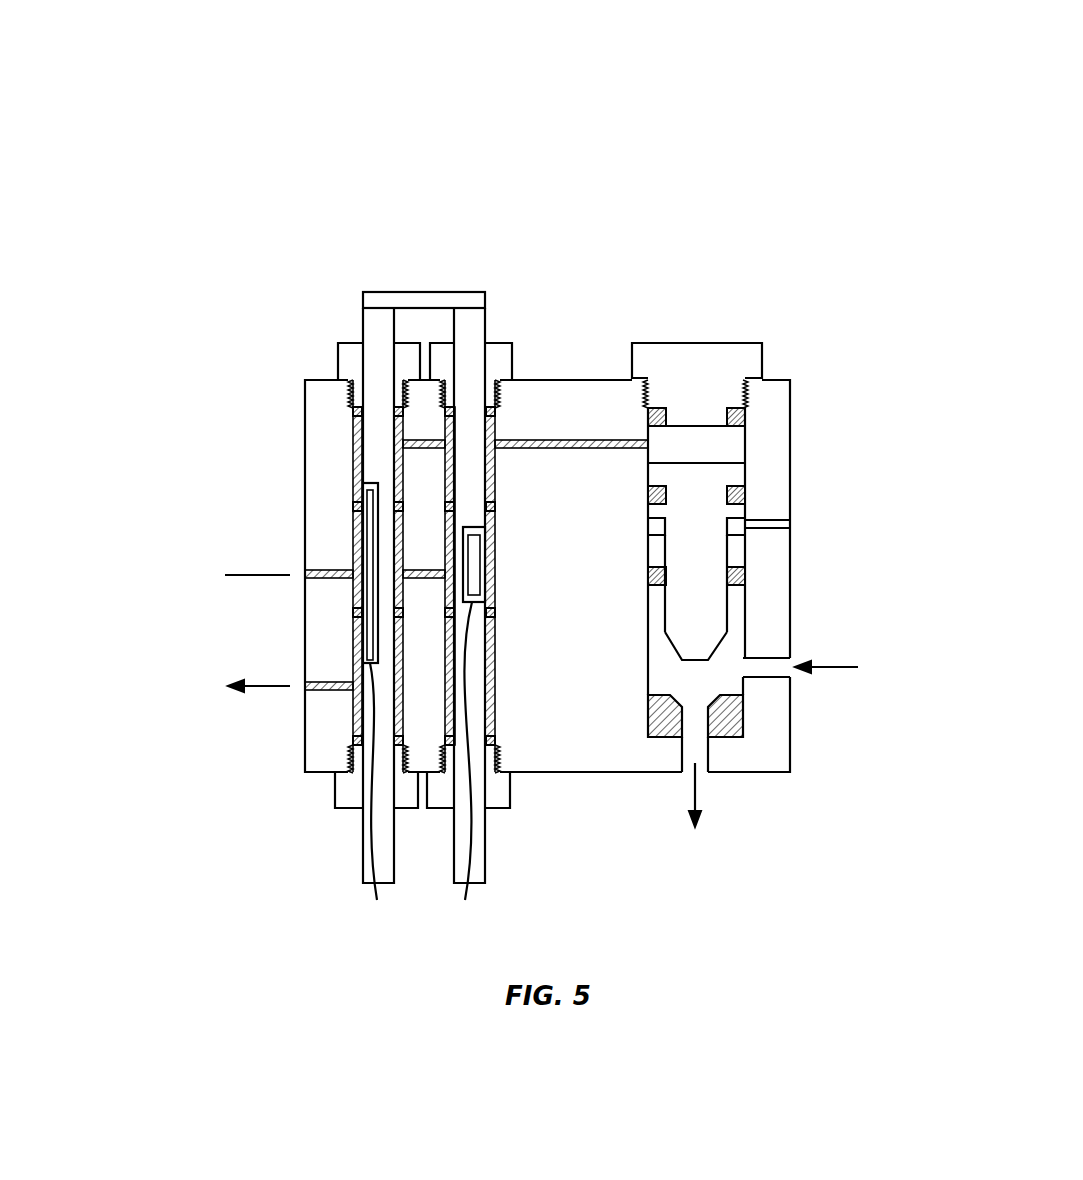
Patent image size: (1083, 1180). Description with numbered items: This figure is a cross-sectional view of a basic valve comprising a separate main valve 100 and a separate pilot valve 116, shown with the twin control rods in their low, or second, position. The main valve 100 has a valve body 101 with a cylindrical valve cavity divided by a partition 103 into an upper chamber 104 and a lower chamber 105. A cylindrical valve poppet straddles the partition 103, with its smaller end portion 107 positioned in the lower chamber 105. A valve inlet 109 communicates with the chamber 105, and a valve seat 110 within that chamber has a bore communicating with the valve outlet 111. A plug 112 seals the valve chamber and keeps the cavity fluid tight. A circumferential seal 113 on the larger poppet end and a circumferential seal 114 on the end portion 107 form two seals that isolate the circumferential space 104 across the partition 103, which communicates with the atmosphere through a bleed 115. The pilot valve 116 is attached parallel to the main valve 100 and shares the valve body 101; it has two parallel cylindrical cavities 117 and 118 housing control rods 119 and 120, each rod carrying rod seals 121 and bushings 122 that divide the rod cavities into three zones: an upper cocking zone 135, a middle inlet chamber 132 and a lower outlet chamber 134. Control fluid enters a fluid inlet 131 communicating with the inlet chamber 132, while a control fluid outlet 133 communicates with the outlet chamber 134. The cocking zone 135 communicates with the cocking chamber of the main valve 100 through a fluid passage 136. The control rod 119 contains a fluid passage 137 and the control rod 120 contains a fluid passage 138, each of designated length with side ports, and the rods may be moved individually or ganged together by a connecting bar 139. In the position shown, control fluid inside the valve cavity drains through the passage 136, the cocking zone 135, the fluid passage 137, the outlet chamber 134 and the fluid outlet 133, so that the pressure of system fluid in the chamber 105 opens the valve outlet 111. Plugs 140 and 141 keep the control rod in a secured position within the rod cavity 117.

The main valve 100 is at (868, 88).
The valve body 101 is at (772, 378).
The partition 103 is at (747, 417).
The upper chamber 104 is at (740, 557).
The lower chamber 105 is at (740, 612).
The end portion 107 is at (700, 643).
The valve inlet 109 is at (765, 670).
The valve seat 110 is at (732, 720).
The valve outlet 111 is at (693, 747).
The plug 112 is at (693, 343).
The circumferential seal 113 is at (747, 493).
The circumferential seal 114 is at (743, 575).
The bleed 115 is at (790, 528).
The pilot valve 116 is at (252, 234).
The cylindrical cavity 117 is at (355, 440).
The cylindrical cavity 118 is at (497, 437).
The control rod 119 is at (383, 325).
The control rod 120 is at (475, 323).
The rod seal 121 is at (495, 505).
The bushing 122 is at (495, 612).
The fluid inlet 131 is at (307, 570).
The inlet chamber 132 is at (355, 583).
The control fluid outlet 133 is at (310, 688).
The outlet chamber 134 is at (353, 715).
The cocking zone 135 is at (355, 472).
The fluid passage 136 is at (608, 448).
The fluid passage 137 is at (389, 804).
The fluid passage 138 is at (464, 774).
The connecting bar 139 is at (418, 292).
The plug 140 is at (337, 347).
The plug 141 is at (345, 810).